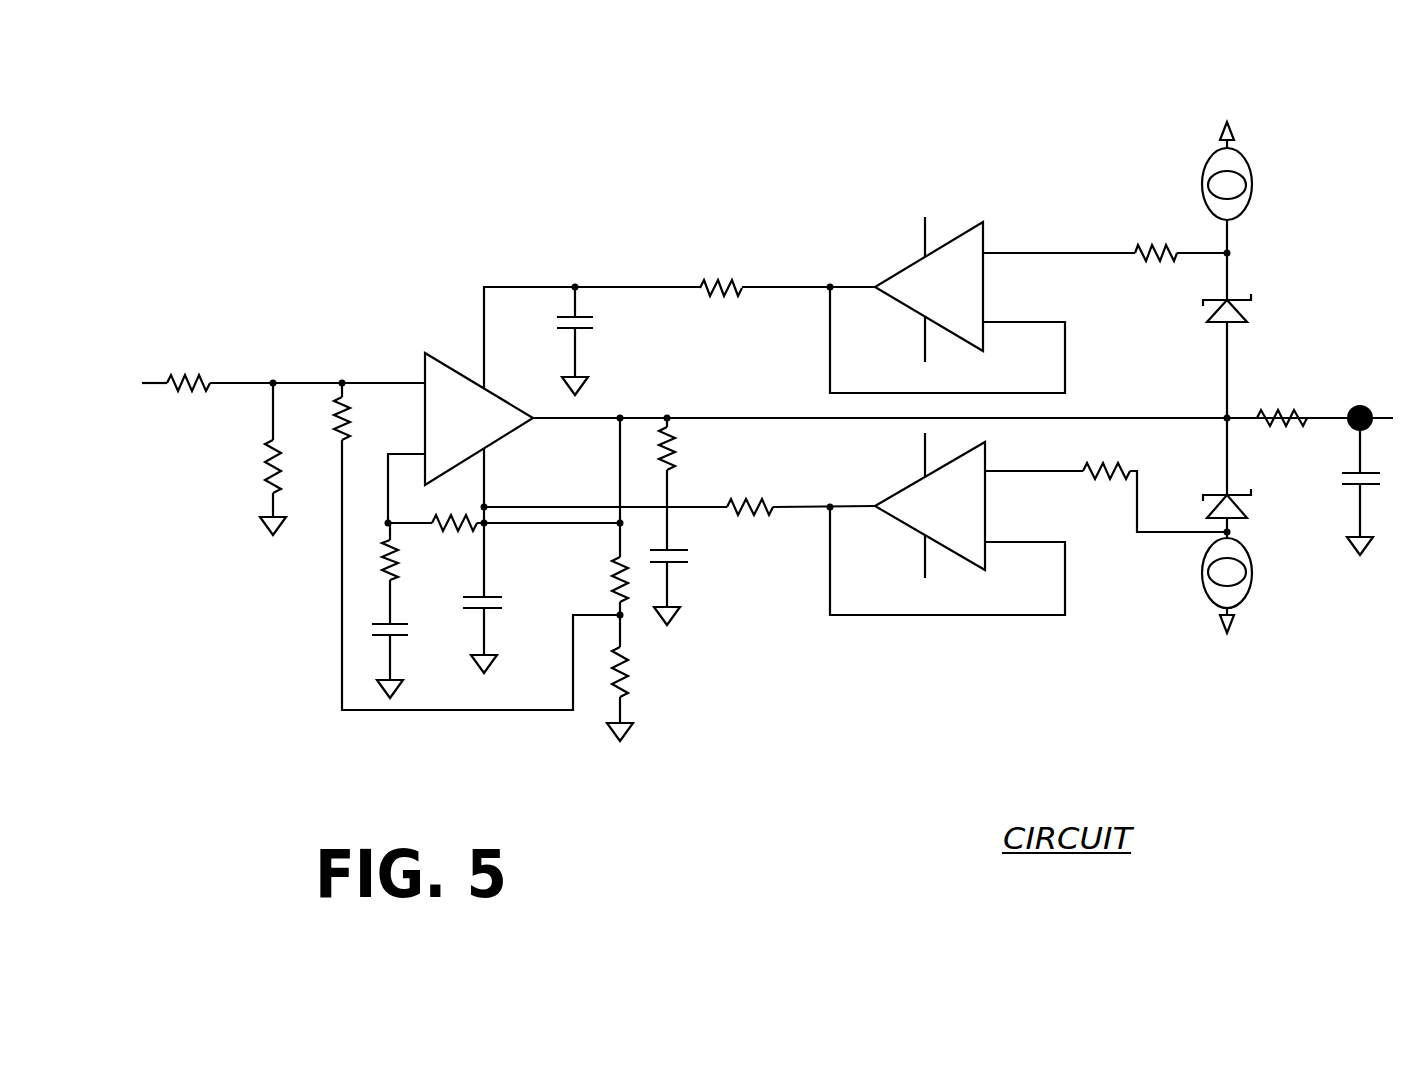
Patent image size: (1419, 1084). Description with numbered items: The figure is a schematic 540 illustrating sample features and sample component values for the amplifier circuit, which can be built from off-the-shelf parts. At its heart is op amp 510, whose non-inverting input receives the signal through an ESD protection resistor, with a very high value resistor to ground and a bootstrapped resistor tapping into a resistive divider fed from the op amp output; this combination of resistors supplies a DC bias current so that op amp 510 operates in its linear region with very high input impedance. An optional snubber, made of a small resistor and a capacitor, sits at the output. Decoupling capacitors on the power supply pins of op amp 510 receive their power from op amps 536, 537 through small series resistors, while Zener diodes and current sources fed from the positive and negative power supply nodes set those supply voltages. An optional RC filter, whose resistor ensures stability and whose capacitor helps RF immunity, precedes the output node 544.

The schematic 540 is at (380, 190).
The op amp 510 is at (477, 428).
The op amp 536 is at (956, 299).
The op amp 537 is at (959, 519).
The output node 544 is at (1360, 402).